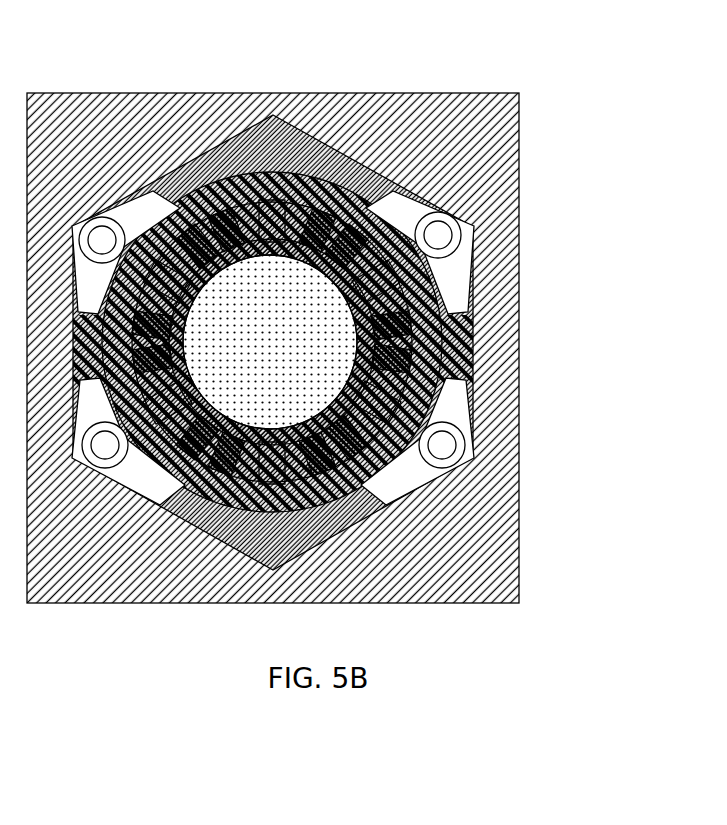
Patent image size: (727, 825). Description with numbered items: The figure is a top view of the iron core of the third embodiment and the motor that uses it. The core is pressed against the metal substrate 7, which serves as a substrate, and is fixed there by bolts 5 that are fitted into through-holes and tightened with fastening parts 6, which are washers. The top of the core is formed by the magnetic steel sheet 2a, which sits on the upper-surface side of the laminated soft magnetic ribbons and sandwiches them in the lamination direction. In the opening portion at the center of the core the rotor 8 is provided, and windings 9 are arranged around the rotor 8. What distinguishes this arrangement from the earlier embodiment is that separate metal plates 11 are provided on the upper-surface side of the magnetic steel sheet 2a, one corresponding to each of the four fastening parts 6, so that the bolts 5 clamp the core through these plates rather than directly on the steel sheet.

The metal substrate 7 is at (477, 522).
The bolt 5 is at (477, 192).
The magnetic steel sheet 2a is at (460, 350).
The fastening part 6 is at (480, 277).
The winding 9 is at (212, 183).
The rotor 8 is at (256, 297).
The metal plate 11 is at (400, 185).